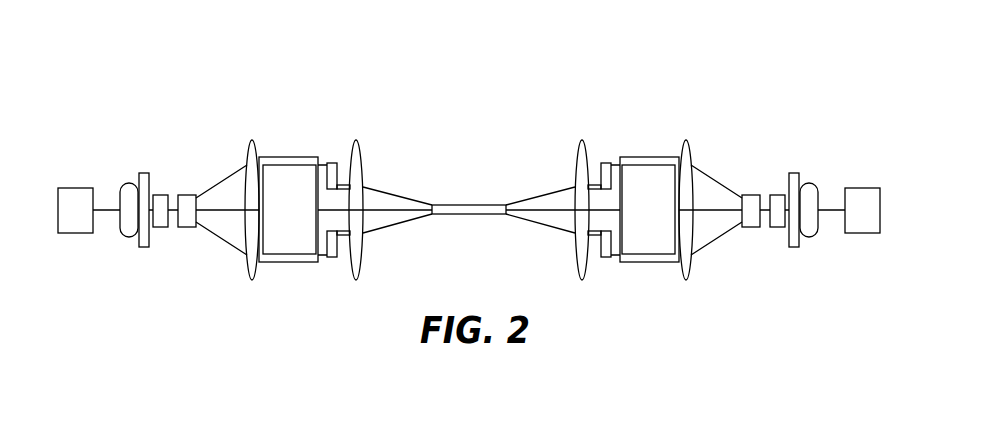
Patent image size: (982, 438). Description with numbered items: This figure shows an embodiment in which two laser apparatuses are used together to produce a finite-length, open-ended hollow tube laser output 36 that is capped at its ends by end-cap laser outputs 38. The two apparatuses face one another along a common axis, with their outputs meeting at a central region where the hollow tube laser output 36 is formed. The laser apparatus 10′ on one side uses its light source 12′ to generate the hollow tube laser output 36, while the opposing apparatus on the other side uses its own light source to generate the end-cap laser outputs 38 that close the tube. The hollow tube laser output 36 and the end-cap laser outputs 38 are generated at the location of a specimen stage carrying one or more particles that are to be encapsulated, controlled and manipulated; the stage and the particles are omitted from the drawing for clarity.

The laser apparatus 10′ is at (305, 102).
The light source 12′ is at (77, 234).
The hollow tube laser output 36 is at (467, 216).
The end-cap laser outputs 38 is at (506, 206).